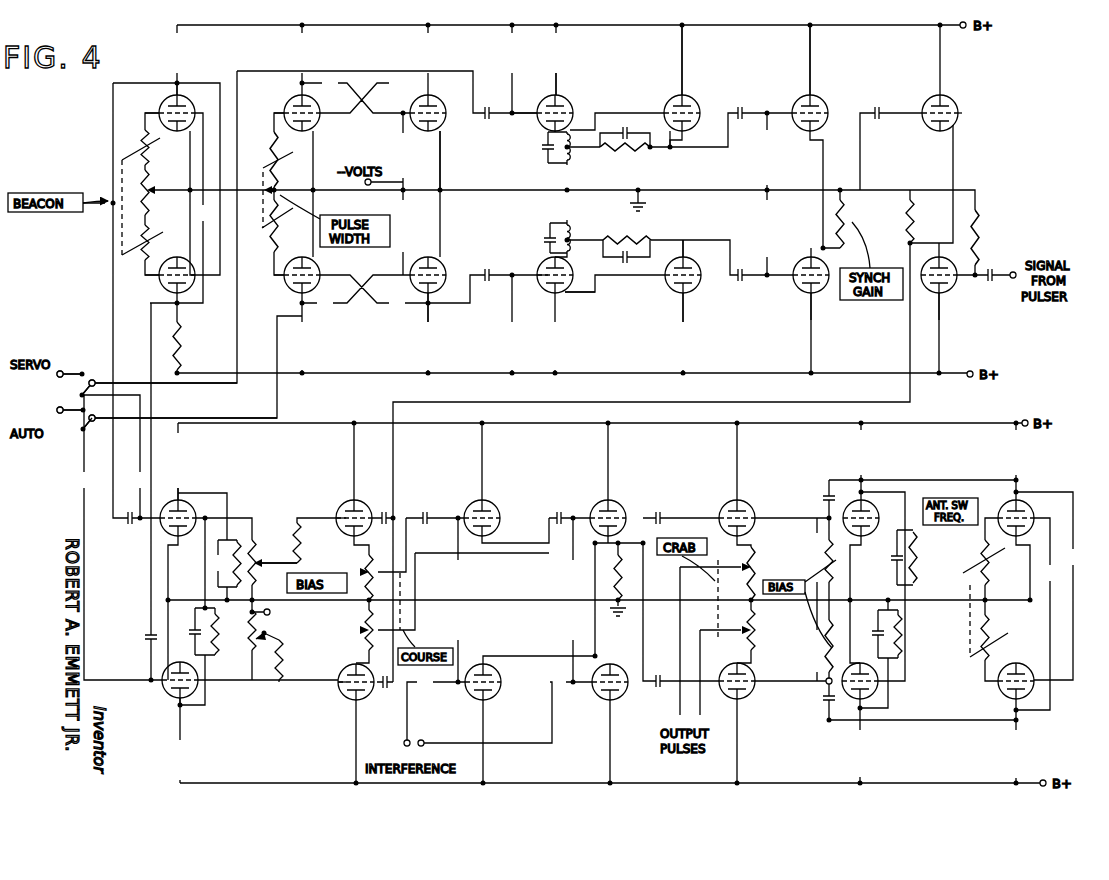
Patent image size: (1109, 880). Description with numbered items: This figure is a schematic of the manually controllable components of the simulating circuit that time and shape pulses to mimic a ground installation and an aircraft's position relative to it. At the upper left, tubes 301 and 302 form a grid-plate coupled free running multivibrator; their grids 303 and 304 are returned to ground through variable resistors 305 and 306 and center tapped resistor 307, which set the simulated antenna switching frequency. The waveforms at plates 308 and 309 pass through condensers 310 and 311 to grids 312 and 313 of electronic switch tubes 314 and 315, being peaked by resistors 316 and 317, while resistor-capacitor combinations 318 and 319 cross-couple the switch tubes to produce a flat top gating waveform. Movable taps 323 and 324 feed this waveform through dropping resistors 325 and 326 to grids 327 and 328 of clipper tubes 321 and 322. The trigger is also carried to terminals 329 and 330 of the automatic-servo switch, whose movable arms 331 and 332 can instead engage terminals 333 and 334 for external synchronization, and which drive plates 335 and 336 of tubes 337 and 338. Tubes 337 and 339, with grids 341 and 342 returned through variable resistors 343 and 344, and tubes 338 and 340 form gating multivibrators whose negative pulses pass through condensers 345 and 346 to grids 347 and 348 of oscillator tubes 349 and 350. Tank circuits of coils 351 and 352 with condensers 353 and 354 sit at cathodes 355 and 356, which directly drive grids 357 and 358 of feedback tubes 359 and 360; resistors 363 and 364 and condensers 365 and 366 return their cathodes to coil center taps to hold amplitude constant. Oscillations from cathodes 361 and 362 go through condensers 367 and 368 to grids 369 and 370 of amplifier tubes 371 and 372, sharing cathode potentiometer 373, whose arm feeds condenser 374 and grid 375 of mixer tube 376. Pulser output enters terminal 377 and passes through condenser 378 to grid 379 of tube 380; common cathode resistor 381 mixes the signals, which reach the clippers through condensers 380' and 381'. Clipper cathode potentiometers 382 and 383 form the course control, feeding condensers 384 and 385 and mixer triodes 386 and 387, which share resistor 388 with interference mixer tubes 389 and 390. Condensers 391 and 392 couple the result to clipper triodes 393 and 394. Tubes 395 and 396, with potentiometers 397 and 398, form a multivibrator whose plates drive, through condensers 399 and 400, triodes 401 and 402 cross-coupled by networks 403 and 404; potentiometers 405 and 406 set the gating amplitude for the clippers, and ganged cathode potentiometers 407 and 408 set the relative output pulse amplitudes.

The tube 301 is at (184, 102).
The plate 308 is at (175, 94).
The grid 303 is at (156, 110).
The variable resistor 305 is at (149, 148).
The center tapped resistor 307 is at (149, 198).
The variable resistor 306 is at (150, 243).
The grid 304 is at (156, 276).
The tube 302 is at (166, 289).
The plate 309 is at (180, 305).
The tube 339 is at (288, 99).
The grid 341 is at (282, 110).
The variable resistor 343 is at (272, 150).
The variable resistor 344 is at (272, 240).
The tube 340 is at (302, 258).
The grid 342 is at (283, 278).
The plate 335 is at (436, 100).
The tube 337 is at (443, 124).
The tube 338 is at (440, 262).
The plate 336 is at (438, 281).
The coupling condenser 345 is at (490, 106).
The oscillator tube 349 is at (559, 92).
The grid 347 is at (568, 108).
The cathode 355 is at (541, 118).
The condenser 353 is at (542, 147).
The coil 351 is at (570, 152).
The resistor 363 is at (626, 150).
The condenser 365 is at (627, 124).
The grid 357 is at (660, 104).
The feedback tube 359 is at (696, 98).
The cathode 361 is at (674, 127).
The coupling condenser 367 is at (745, 104).
The amplifier tube 371 is at (813, 93).
The grid 369 is at (826, 108).
The coupling condenser 374 is at (882, 106).
The grid 375 is at (949, 101).
The tube 376 is at (960, 114).
The condenser 354 is at (543, 236).
The coil 352 is at (572, 237).
The resistor 364 is at (640, 237).
The condenser 366 is at (617, 258).
The oscillator tube 350 is at (542, 260).
The coupling condenser 346 is at (489, 268).
The cathode 356 is at (541, 288).
The grid 348 is at (575, 287).
The cathode 362 is at (683, 248).
The grid 358 is at (668, 281).
The feedback tube 360 is at (694, 290).
The coupling condenser 368 is at (741, 267).
The grid 370 is at (795, 281).
The amplifier tube 372 is at (805, 295).
The common cathode potentiometer 373 is at (838, 218).
The common cathode resistor 381 is at (894, 221).
The coupling condenser 378 is at (977, 247).
The grid 379 is at (954, 282).
The tube 380 is at (952, 307).
The input terminal 377 is at (992, 281).
The switch terminal 333 is at (80, 370).
The terminal 329 is at (86, 381).
The movable arm 331 is at (97, 383).
The movable arm 332 is at (96, 417).
The switch terminal 334 is at (80, 413).
The terminal 330 is at (87, 424).
The condenser 310 is at (127, 520).
The condenser 311 is at (147, 632).
The grid 312 is at (190, 534).
The tube 314 is at (181, 497).
The resistor-capacitor combination 319 is at (237, 540).
The resistor 316 is at (254, 537).
The movable tap 323 is at (258, 562).
The resistor-capacitor combination 318 is at (197, 622).
The grid 313 is at (164, 690).
The tube 315 is at (200, 688).
The resistor 317 is at (256, 660).
The movable tap 324 is at (270, 629).
The dropping resistor 326 is at (282, 643).
The clipper tube 321 is at (340, 504).
The grid 327 is at (338, 521).
The dropping resistor 325 is at (300, 545).
The clipper tube 322 is at (342, 672).
The grid 328 is at (326, 685).
The potentiometer 382 is at (367, 566).
The potentiometer 383 is at (367, 650).
The coupling condenser 380' is at (376, 501).
The coupling condenser 381' is at (377, 698).
The condenser 384 is at (424, 510).
The mixer triode 386 is at (468, 506).
The condenser 385 is at (556, 510).
The mixer triode 387 is at (604, 502).
The common cathode resistor 388 is at (622, 574).
The mixer tube 389 is at (499, 672).
The mixer tube 390 is at (612, 664).
The coupling condenser 391 is at (655, 511).
The coupling condenser 392 is at (656, 674).
The clipper triode 393 is at (747, 505).
The clipper triode 394 is at (750, 675).
The condenser 399 is at (823, 498).
The variable potentiometer 407 is at (754, 560).
The variable potentiometer 408 is at (754, 622).
The variable potentiometer 405 is at (834, 562).
The variable potentiometer 406 is at (833, 632).
The resistor-capacitor network 404 is at (900, 620).
The triode 401 is at (868, 510).
The resistor-capacitor network 403 is at (915, 538).
The triode 402 is at (878, 688).
The condenser 400 is at (824, 697).
The tube 395 is at (1029, 509).
The variable potentiometer 397 is at (989, 565).
The variable potentiometer 398 is at (989, 622).
The tube 396 is at (998, 680).